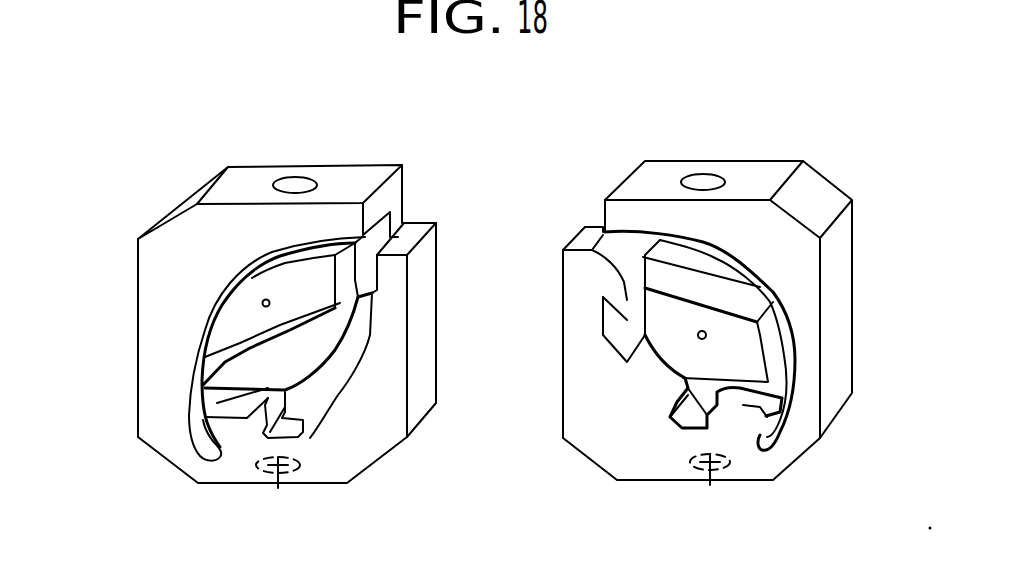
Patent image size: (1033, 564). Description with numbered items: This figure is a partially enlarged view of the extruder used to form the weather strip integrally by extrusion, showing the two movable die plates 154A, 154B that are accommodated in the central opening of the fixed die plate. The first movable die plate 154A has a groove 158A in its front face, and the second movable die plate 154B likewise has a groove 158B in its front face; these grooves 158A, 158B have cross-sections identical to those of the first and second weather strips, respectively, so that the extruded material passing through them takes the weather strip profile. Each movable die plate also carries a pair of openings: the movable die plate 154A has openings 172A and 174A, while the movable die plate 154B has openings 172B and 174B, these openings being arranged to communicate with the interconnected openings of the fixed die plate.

The movable die plate 154A is at (266, 164).
The opening 172A is at (300, 185).
The groove 158A is at (204, 313).
The opening 174A is at (280, 490).
The movable die plate 154B is at (665, 158).
The opening 172B is at (707, 180).
The groove 158B is at (628, 322).
The opening 174B is at (712, 488).